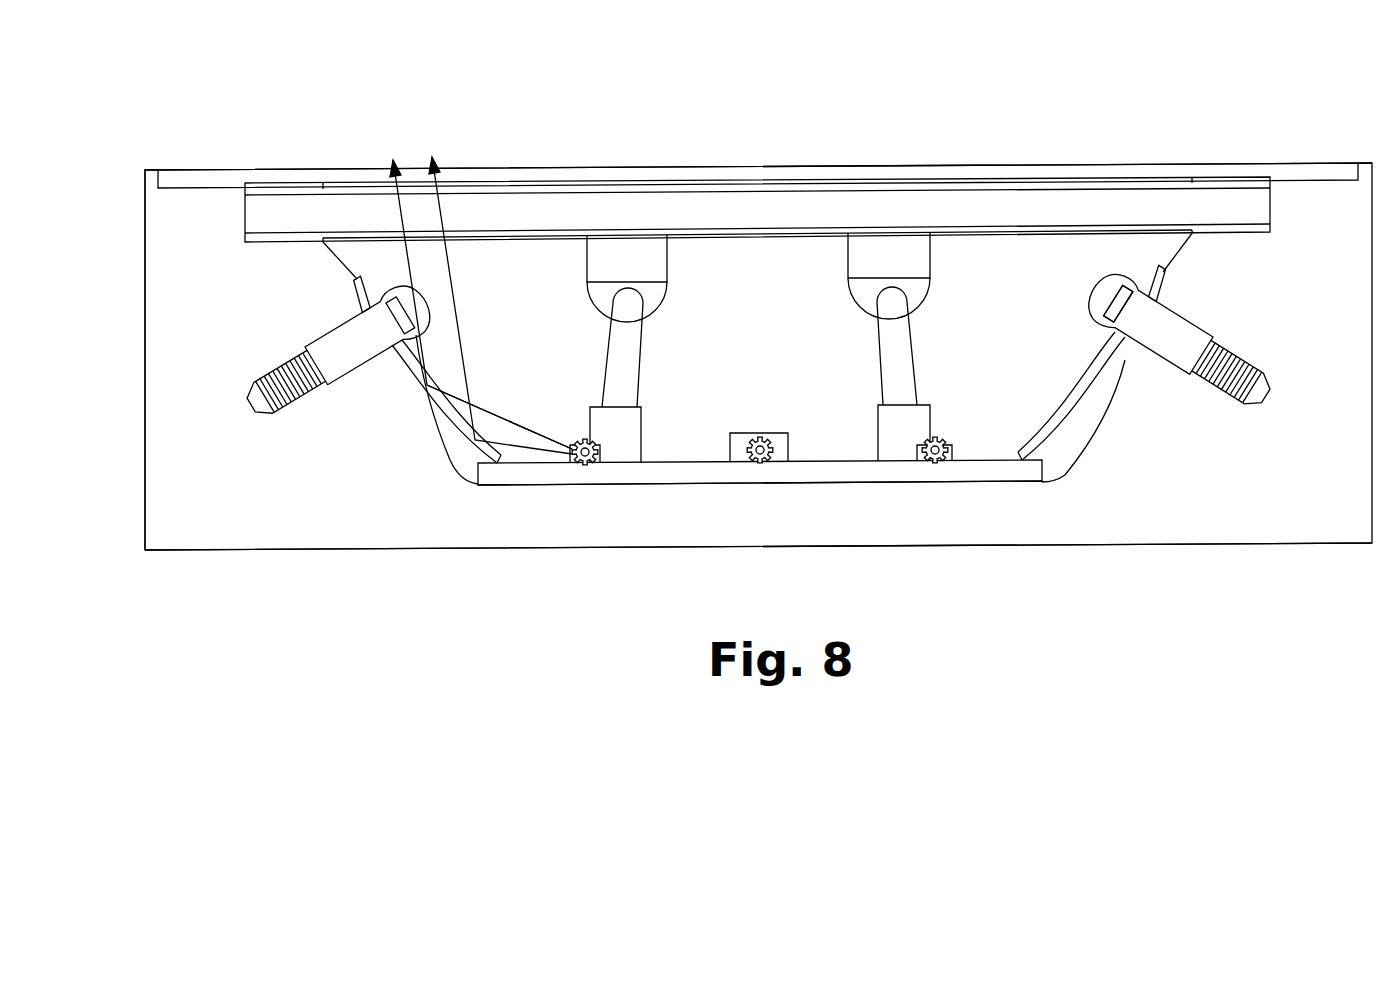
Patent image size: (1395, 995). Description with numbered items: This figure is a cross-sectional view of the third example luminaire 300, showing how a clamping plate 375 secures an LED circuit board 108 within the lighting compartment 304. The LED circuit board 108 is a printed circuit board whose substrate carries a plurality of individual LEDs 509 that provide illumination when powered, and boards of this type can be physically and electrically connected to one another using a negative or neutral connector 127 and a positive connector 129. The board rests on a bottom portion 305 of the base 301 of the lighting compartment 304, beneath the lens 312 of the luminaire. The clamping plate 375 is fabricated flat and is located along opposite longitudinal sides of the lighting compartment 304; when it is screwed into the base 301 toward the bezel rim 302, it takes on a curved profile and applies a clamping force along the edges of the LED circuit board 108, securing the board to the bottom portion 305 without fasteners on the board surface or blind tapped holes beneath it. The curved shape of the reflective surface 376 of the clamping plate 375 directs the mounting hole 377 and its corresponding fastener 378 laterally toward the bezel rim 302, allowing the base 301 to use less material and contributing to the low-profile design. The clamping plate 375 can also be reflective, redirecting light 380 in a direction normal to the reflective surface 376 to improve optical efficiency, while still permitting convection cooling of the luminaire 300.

The third example luminaire 300 is at (1181, 116).
The base 301 is at (280, 433).
The bezel rim 302 is at (163, 518).
The lens 312 is at (1043, 203).
The negative or neutral connector 127 is at (627, 307).
The positive connector 129 is at (890, 297).
The LED circuit board 108 is at (992, 470).
The bottom portion 305 is at (697, 508).
The individual LEDs 509 is at (578, 463).
The light 380 is at (449, 254).
The reflective surface 376 is at (466, 392).
The clamping plate 375 is at (410, 377).
The fastener 378 is at (335, 343).
The mounting hole 377 is at (1162, 322).
The lighting compartment 304 is at (1050, 370).